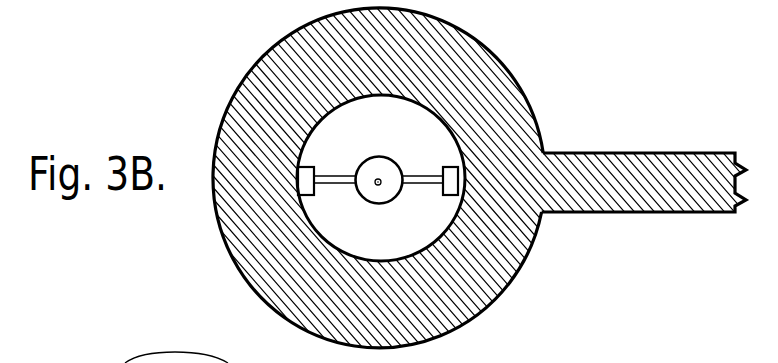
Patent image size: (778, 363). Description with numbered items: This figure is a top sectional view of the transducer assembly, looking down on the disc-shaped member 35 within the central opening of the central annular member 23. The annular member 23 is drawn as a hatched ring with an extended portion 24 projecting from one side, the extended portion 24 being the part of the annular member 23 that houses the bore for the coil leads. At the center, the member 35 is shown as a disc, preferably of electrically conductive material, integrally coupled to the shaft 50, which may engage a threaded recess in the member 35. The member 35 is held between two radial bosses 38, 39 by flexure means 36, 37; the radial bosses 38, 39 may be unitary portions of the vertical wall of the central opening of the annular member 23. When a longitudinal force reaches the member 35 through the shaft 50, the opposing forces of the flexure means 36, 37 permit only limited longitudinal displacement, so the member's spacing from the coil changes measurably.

The central annular member 23 is at (235, 228).
The extended portion 24 is at (633, 213).
The disc-shaped member 35 is at (380, 156).
The flexure means 36 is at (335, 185).
The flexure means 37 is at (418, 185).
The radial boss 38 is at (306, 166).
The radial boss 39 is at (450, 166).
The shaft 50 is at (378, 186).